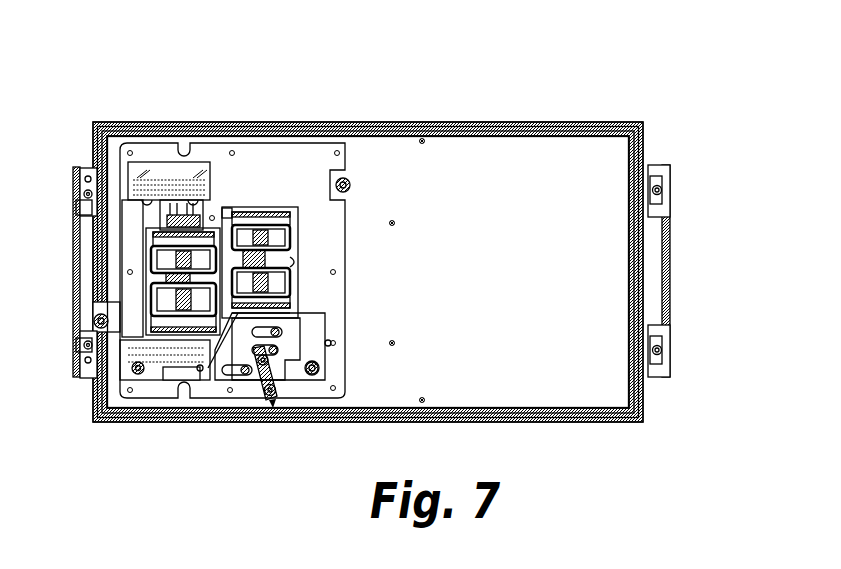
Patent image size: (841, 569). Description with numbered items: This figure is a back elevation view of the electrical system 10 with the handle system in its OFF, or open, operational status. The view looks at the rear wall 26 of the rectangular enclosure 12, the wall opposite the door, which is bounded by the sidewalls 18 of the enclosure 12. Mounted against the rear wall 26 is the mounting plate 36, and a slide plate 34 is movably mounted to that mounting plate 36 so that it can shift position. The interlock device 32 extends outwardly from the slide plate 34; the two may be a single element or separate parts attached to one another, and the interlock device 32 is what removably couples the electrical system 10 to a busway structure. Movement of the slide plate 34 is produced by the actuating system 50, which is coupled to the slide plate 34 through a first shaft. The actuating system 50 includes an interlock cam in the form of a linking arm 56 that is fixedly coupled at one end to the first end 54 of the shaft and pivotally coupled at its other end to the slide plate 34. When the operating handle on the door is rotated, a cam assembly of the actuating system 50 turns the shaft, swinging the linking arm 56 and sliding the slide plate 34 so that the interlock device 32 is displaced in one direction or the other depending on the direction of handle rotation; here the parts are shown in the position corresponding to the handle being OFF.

The electrical system 10 is at (348, 86).
The enclosure 12 is at (84, 386).
The sidewalls 18 is at (463, 122).
The rear wall 26 is at (516, 301).
The interlock device 32 is at (292, 285).
The slide plate 34 is at (285, 350).
The mounting plate 36 is at (330, 328).
The actuating system 50 is at (274, 408).
The first end 54 is at (264, 396).
The linking arm 56 is at (318, 382).